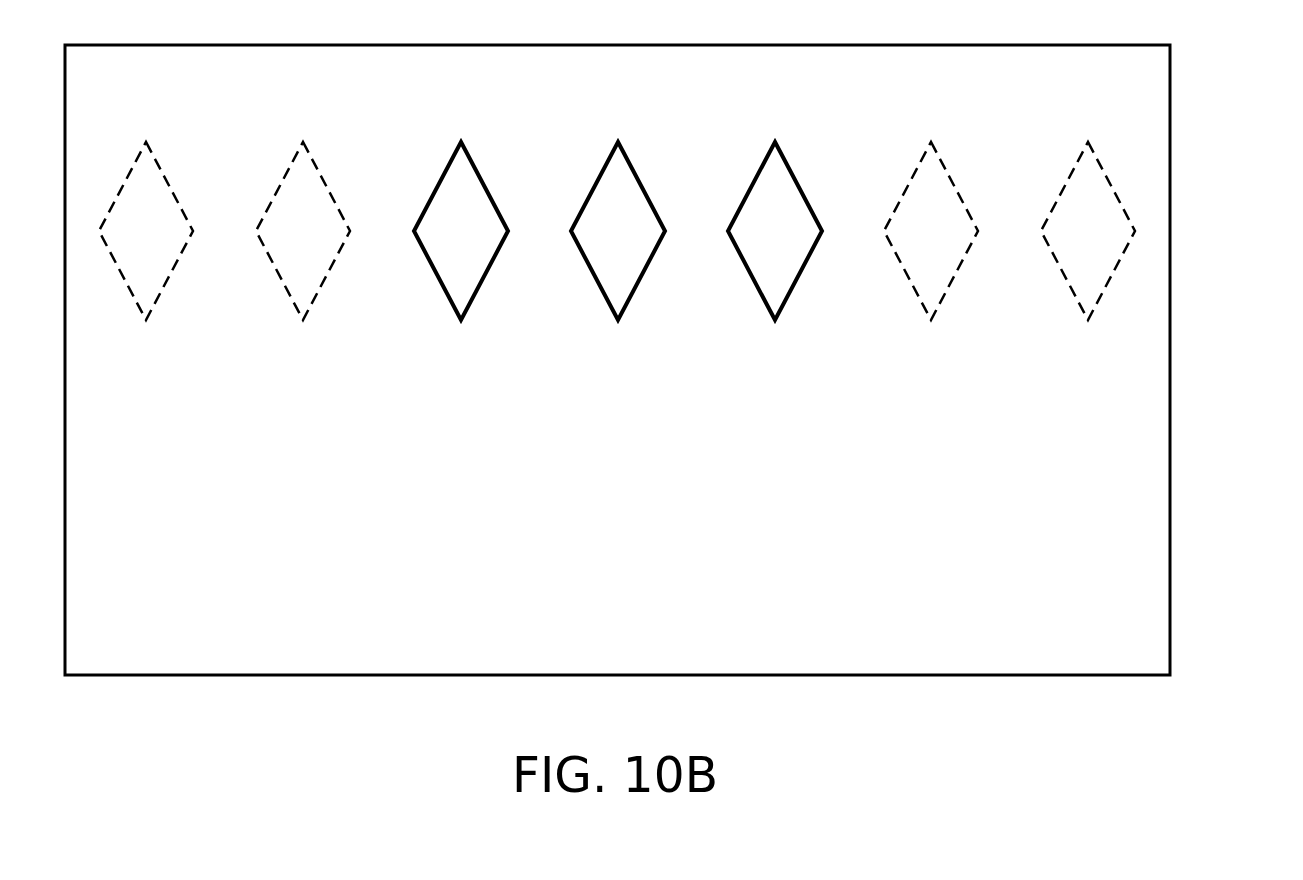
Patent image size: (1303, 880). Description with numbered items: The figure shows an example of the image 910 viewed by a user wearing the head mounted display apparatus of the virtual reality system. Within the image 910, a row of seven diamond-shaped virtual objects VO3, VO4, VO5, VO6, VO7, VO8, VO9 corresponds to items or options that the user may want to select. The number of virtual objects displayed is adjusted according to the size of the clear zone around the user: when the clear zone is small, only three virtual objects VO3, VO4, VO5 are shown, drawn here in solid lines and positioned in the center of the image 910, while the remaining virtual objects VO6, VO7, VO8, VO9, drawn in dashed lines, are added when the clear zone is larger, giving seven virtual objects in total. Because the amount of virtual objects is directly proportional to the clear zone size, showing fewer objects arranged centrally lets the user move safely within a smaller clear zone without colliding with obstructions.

The image 910 is at (1170, 360).
The virtual object VO3 is at (465, 320).
The virtual object VO4 is at (622, 320).
The virtual object VO5 is at (779, 320).
The virtual object VO6 is at (146, 322).
The virtual object VO7 is at (303, 322).
The virtual object VO8 is at (931, 322).
The virtual object VO9 is at (1088, 322).